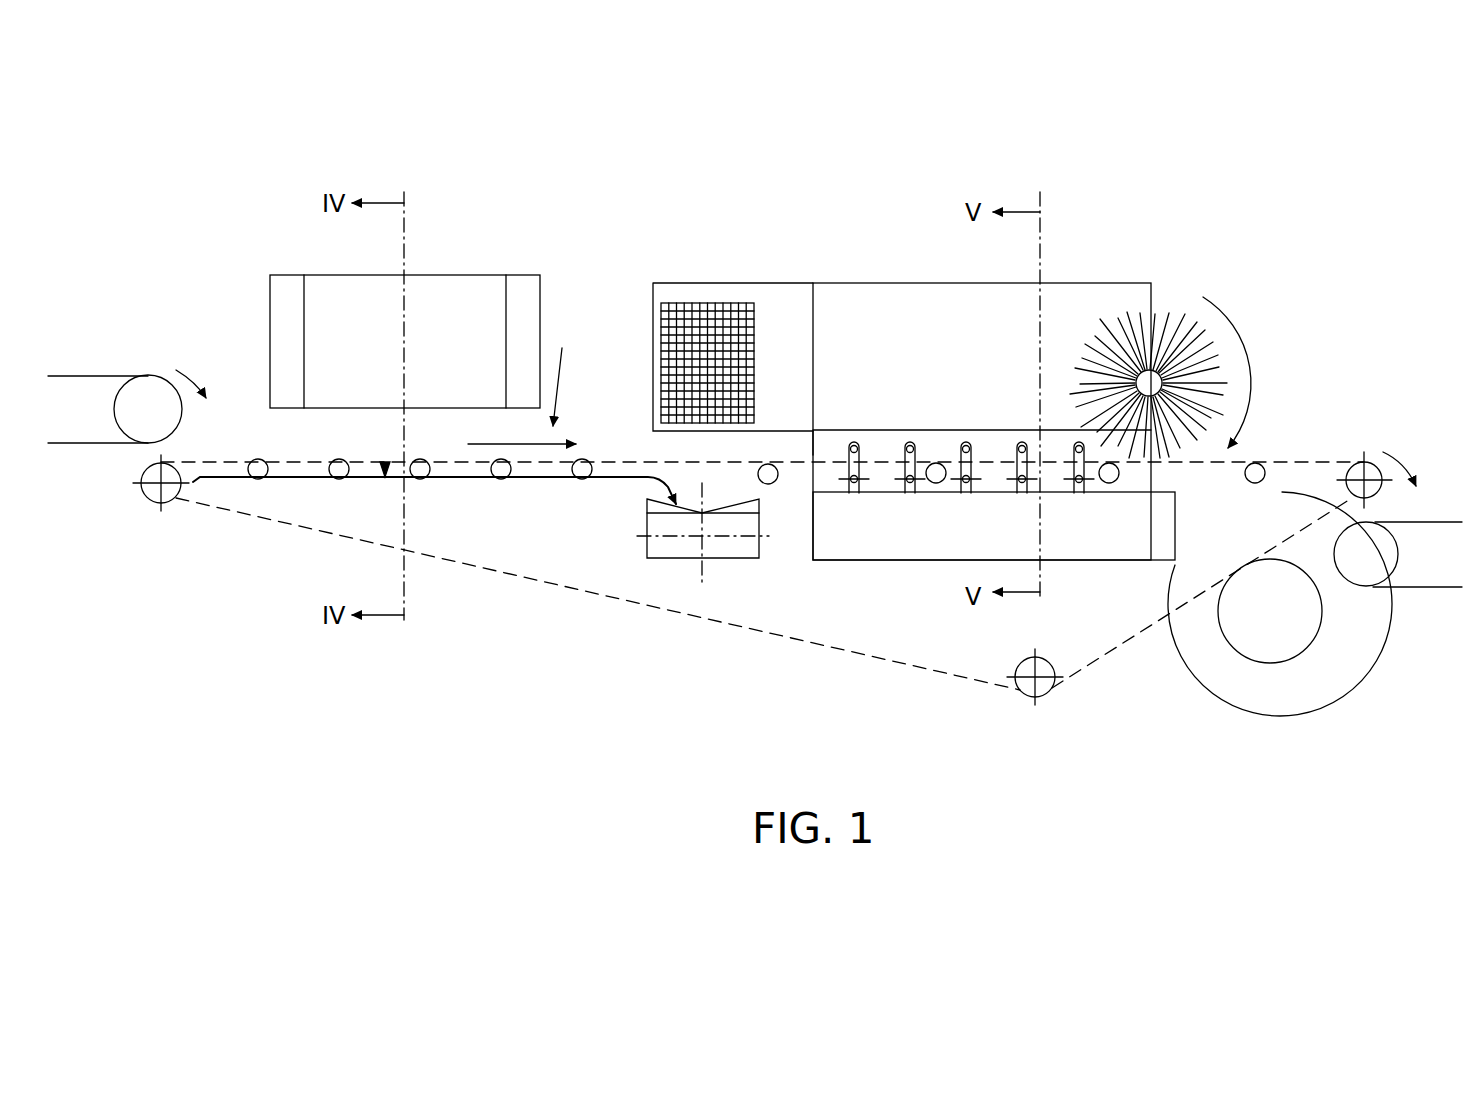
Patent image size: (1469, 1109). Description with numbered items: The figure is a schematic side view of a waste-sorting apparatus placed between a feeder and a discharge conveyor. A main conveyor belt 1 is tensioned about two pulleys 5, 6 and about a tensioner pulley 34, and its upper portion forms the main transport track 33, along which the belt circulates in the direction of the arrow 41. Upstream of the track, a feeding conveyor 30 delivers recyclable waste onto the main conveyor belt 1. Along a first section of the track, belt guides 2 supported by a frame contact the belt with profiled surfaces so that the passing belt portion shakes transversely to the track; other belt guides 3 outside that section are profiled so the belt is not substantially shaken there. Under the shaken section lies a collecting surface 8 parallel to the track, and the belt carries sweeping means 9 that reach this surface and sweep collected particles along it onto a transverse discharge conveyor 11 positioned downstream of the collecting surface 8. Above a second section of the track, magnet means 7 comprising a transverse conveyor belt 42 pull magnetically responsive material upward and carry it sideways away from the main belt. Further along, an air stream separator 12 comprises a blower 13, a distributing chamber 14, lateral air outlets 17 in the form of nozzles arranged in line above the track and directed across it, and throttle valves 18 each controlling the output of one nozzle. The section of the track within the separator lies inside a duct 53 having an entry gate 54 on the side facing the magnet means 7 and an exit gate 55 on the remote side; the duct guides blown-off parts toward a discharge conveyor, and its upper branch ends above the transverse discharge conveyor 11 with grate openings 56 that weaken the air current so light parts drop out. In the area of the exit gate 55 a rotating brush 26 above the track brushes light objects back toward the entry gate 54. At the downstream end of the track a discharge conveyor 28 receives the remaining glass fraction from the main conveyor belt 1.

The main conveyor belt 1 is at (204, 514).
The belt guides 2 is at (262, 474).
The other belt guides 3 is at (772, 478).
The pulley 5 is at (1367, 474).
The pulley 6 is at (150, 490).
The magnet means 7 is at (481, 266).
The collecting surface 8 is at (541, 480).
The sweeping means 9 is at (383, 470).
The transverse discharge conveyor 11 is at (674, 548).
The air stream separator 12 is at (859, 266).
The blower 13 is at (1210, 697).
The distributing chamber 14 is at (877, 542).
The lateral air outlets 17 is at (857, 440).
The throttle valves 18 is at (1019, 440).
The rotating brush 26 is at (1174, 320).
The discharge conveyor 28 is at (1448, 569).
The feeding conveyor 30 is at (100, 376).
The transport track 33 is at (564, 372).
The tensioner pulley 34 is at (1043, 671).
The arrow 41 is at (497, 443).
The transverse conveyor belt 42 is at (208, 371).
The duct 53 is at (957, 331).
The entry gate 54 is at (812, 443).
The exit gate 55 is at (1154, 443).
The grate openings 56 is at (704, 345).